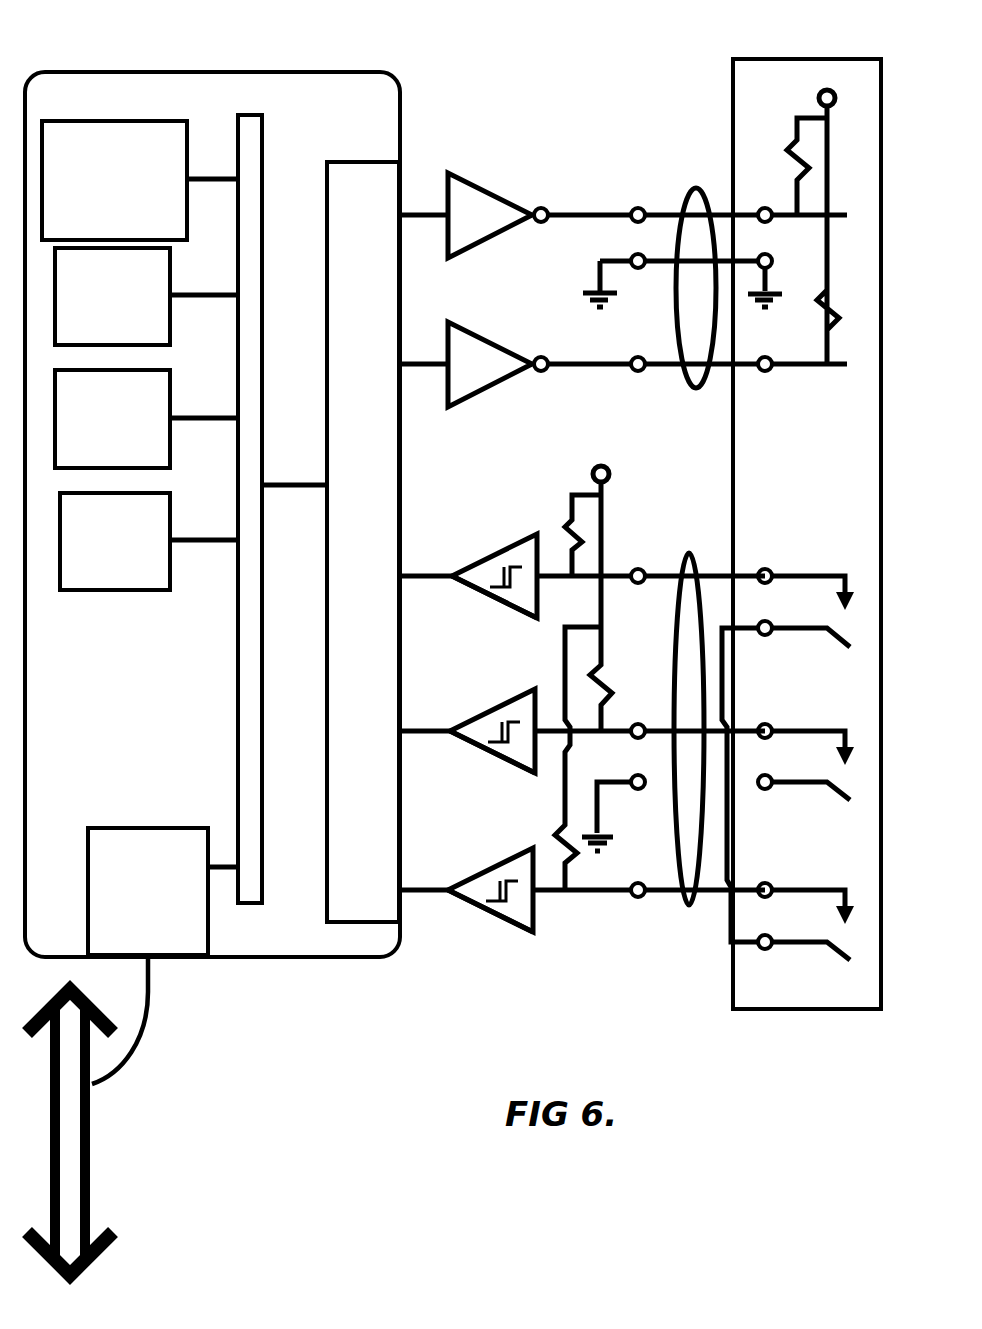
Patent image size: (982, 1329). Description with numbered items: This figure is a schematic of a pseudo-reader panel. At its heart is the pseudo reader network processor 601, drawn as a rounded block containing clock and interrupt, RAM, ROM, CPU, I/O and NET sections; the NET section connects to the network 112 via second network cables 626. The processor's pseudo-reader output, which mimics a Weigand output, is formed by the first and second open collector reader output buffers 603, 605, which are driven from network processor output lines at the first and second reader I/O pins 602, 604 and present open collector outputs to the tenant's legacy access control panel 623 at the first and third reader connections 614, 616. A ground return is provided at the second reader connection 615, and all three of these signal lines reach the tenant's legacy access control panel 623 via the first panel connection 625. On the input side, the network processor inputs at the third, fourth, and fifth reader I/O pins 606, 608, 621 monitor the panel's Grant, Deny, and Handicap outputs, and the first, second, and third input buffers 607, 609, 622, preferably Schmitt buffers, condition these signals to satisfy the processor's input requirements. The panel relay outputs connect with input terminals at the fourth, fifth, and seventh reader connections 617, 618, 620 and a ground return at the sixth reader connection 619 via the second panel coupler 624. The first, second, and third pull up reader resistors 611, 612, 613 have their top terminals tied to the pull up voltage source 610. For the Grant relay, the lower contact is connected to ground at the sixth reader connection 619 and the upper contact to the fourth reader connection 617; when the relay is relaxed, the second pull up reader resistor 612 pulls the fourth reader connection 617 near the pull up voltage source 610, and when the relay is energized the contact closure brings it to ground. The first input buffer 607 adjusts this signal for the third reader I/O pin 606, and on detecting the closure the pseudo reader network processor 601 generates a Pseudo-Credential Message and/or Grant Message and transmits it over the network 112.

The pseudo reader network processor 601 is at (210, 56).
The first reader I/O pin 602 is at (423, 207).
The first open collector reader output buffer 603 is at (488, 188).
The second reader I/O pin 604 is at (423, 358).
The second open collector reader output buffer 605 is at (488, 342).
The third reader I/O pin 606 is at (437, 565).
The first input buffer 607 is at (512, 610).
The fourth reader I/O pin 608 is at (435, 718).
The second input buffer 609 is at (512, 772).
The pull up voltage source 610 is at (600, 467).
The first pull up reader resistor 611 is at (557, 846).
The second pull up reader resistor 612 is at (563, 523).
The third pull up reader resistor 613 is at (637, 672).
The first reader connection 614 is at (638, 206).
The second reader connection 615 is at (638, 254).
The third reader connection 616 is at (638, 356).
The fourth reader connection 617 is at (638, 568).
The fifth reader connection 618 is at (638, 741).
The sixth reader connection 619 is at (639, 792).
The seventh reader connection 620 is at (637, 900).
The fifth reader I/O pin 621 is at (431, 888).
The third input buffer 622 is at (511, 933).
The tenant's legacy access control panel 623 is at (732, 145).
The second panel coupler 624 is at (702, 540).
The first panel connection 625 is at (699, 388).
The second network cables 626 is at (150, 964).
The network 112 is at (92, 1178).